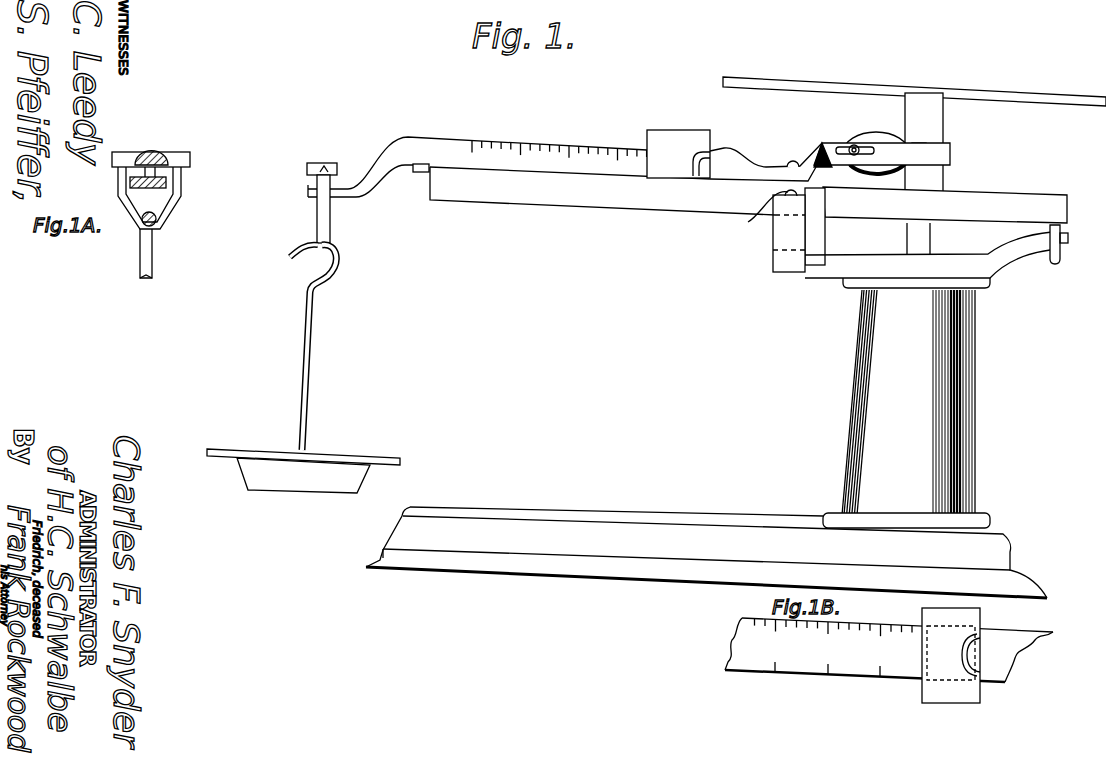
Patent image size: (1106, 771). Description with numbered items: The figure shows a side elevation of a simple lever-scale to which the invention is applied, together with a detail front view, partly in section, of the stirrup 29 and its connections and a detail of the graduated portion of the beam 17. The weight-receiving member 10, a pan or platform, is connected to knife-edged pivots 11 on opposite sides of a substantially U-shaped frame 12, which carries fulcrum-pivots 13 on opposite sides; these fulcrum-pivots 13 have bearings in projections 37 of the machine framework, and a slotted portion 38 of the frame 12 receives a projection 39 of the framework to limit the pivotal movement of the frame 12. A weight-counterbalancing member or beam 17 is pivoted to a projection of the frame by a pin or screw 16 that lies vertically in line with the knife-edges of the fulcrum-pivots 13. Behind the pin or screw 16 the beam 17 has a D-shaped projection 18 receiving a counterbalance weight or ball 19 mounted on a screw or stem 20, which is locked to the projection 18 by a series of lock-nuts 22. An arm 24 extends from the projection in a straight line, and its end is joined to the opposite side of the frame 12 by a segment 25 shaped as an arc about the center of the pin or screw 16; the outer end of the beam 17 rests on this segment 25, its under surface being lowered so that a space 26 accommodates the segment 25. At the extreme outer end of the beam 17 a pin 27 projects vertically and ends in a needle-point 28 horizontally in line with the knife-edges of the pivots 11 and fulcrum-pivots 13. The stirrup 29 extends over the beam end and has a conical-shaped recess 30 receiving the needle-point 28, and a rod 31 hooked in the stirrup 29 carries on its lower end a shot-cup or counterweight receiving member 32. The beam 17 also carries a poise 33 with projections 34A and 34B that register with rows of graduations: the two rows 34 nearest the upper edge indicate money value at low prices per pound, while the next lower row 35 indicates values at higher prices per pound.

In FIG. 1, the weight-receiving member 10 is at (914, 83).
In FIG. 1, the knife-edged pivots 11 is at (926, 212).
In FIG. 1, the frame 12 is at (1008, 198).
In FIG. 1, the fulcrum-pivots 13 is at (759, 212).
In FIG. 1, the pin or screw 16 is at (793, 160).
In FIG. 1, the weight-counterbalancing member or beam 17 is at (470, 142).
In FIG. 1B, the weight-counterbalancing member or beam 17 is at (735, 638).
In FIG. 1, the D-shaped projection 18 is at (950, 155).
In FIG. 1, the counterbalance weight or ball 19 is at (880, 142).
In FIG. 1, the screw or stem 20 is at (852, 146).
In FIG. 1, the lock-nuts 22 is at (862, 152).
In FIG. 1, the arm 24 is at (602, 191).
In FIG. 1, the segment 25 is at (414, 174).
In FIG. 1, the space 26 is at (406, 172).
In FIG. 1A, the pin 27 is at (170, 172).
In FIG. 1A, the needle-point 28 is at (160, 155).
In FIG. 1, the stirrup 29 is at (320, 162).
In FIG. 1A, the stirrup 29 is at (181, 192).
In FIG. 1A, the conical-shaped recess 30 is at (143, 151).
In FIG. 1, the rod 31 is at (320, 285).
In FIG. 1A, the rod 31 is at (153, 248).
In FIG. 1, the shot-cup or counterweight receiving member 32 is at (303, 471).
In FIG. 1, the poise 33 is at (690, 134).
In FIG. 1, the rows of graduations 34 is at (617, 148).
In FIG. 1B, the rows of graduations 34 is at (873, 628).
In FIG. 1, the projection of poise 34A is at (712, 158).
In FIG. 1B, the projection of poise 34A is at (985, 634).
In FIG. 1B, the projection of poise 34B is at (985, 676).
In FIG. 1B, the lower row of graduations 35 is at (888, 676).
In FIG. 1, the projections of framework 37 is at (789, 231).
In FIG. 1, the slotted portion 38 is at (1061, 255).
In FIG. 1, the projection of framework 39 is at (1006, 258).